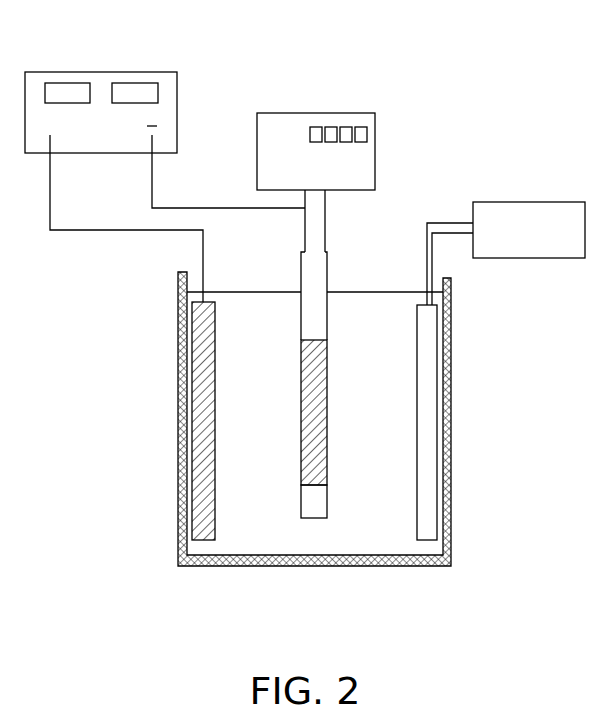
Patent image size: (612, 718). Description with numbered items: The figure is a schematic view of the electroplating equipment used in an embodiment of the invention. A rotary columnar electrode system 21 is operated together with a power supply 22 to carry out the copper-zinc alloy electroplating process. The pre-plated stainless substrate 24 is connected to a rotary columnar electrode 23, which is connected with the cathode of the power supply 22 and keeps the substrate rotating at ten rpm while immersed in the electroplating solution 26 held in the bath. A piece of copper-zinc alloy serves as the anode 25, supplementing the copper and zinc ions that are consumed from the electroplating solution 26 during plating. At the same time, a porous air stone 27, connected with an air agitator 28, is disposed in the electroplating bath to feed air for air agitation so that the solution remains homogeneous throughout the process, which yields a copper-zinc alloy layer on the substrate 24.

The rotary columnar electrode system 21 is at (297, 128).
The power supply 22 is at (100, 80).
The rotary columnar electrode 23 is at (322, 215).
The pre-plated stainless substrate 24 is at (313, 478).
The anode 25 is at (195, 443).
The electroplating solution 26 is at (243, 541).
The porous air stone 27 is at (432, 448).
The air agitator 28 is at (519, 240).